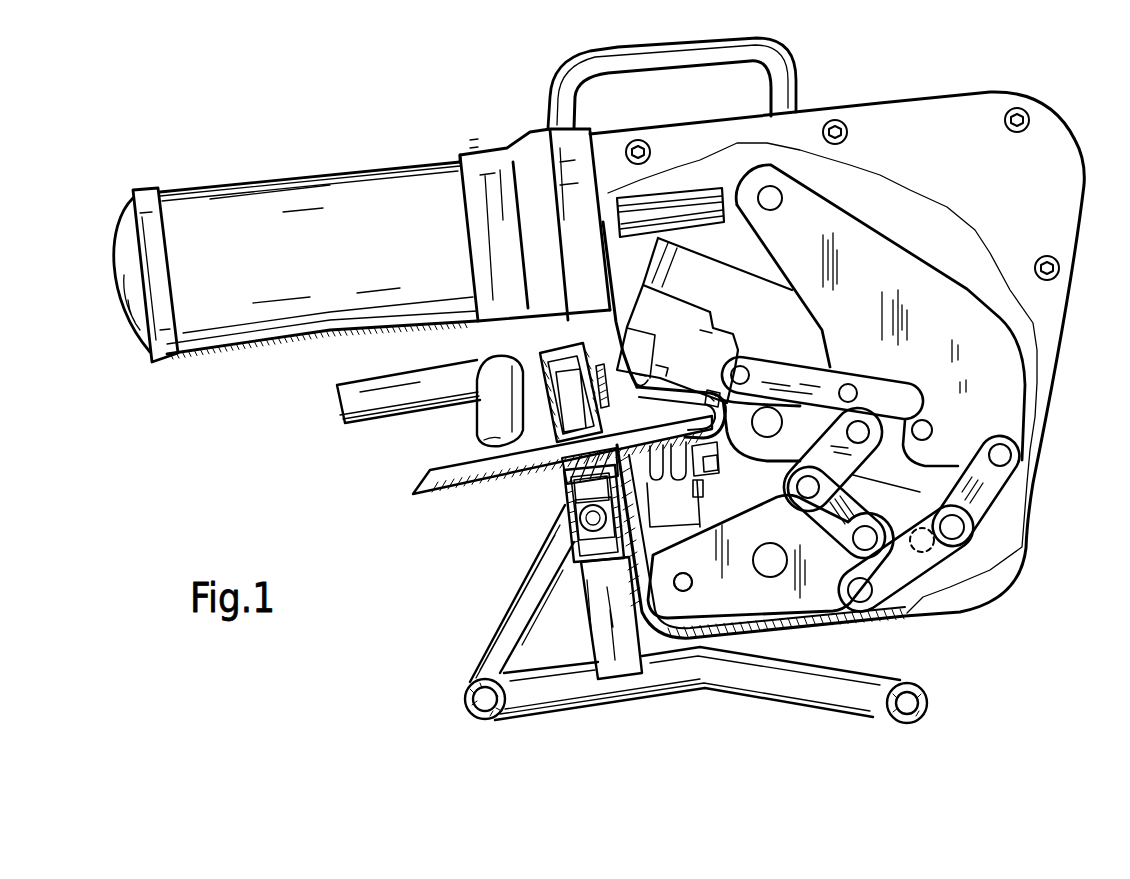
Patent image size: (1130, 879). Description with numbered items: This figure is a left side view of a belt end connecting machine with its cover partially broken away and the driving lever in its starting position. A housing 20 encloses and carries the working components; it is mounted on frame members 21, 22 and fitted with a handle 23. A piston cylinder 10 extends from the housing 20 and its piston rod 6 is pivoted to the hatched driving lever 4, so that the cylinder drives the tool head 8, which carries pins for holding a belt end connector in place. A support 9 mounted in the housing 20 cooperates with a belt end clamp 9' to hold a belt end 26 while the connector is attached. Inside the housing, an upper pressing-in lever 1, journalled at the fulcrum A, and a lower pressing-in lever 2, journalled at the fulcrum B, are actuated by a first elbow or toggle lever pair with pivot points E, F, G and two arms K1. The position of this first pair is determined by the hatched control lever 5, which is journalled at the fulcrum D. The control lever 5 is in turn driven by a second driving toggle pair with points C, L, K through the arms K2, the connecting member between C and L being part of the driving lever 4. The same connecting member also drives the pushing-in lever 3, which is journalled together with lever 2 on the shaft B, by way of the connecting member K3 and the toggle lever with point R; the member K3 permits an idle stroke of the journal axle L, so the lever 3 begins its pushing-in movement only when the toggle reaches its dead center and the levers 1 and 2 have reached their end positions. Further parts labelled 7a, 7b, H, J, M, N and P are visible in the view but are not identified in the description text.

The upper pressing-in lever 1 is at (722, 274).
The lower pressing-in lever 2 is at (753, 514).
The pushing-in lever 3 is at (878, 507).
The driving lever 4 is at (919, 280).
The control lever 5 is at (918, 578).
The piston rod 6 is at (684, 202).
The switch element 7a is at (562, 351).
The switch element 7b is at (562, 351).
The tool head 8 is at (671, 354).
The support 9 is at (586, 572).
The belt end clamp 9' is at (572, 453).
The piston cylinder 10 is at (362, 190).
The housing 20 is at (1076, 221).
The frame member 21 is at (513, 603).
The frame member 22 is at (668, 688).
The handle 23 is at (775, 62).
The belt end 26 is at (452, 492).
The fulcrum A is at (759, 424).
The fulcrum B is at (768, 562).
The toggle lever point C is at (927, 428).
The fulcrum D is at (857, 601).
The toggle lever point E is at (847, 432).
The toggle lever point F is at (797, 486).
The toggle lever point G is at (860, 543).
The pivot H is at (690, 588).
The pivot J is at (690, 588).
The toggle lever point K is at (958, 532).
The toggle lever arms K1 is at (845, 510).
The toggle lever arms K2 is at (982, 503).
The elbow lever connecting member K3 is at (937, 496).
The journal axle L is at (1002, 445).
The pivot M is at (849, 384).
The pivot N is at (745, 368).
The pivot P is at (774, 206).
The toggle lever point R is at (918, 548).